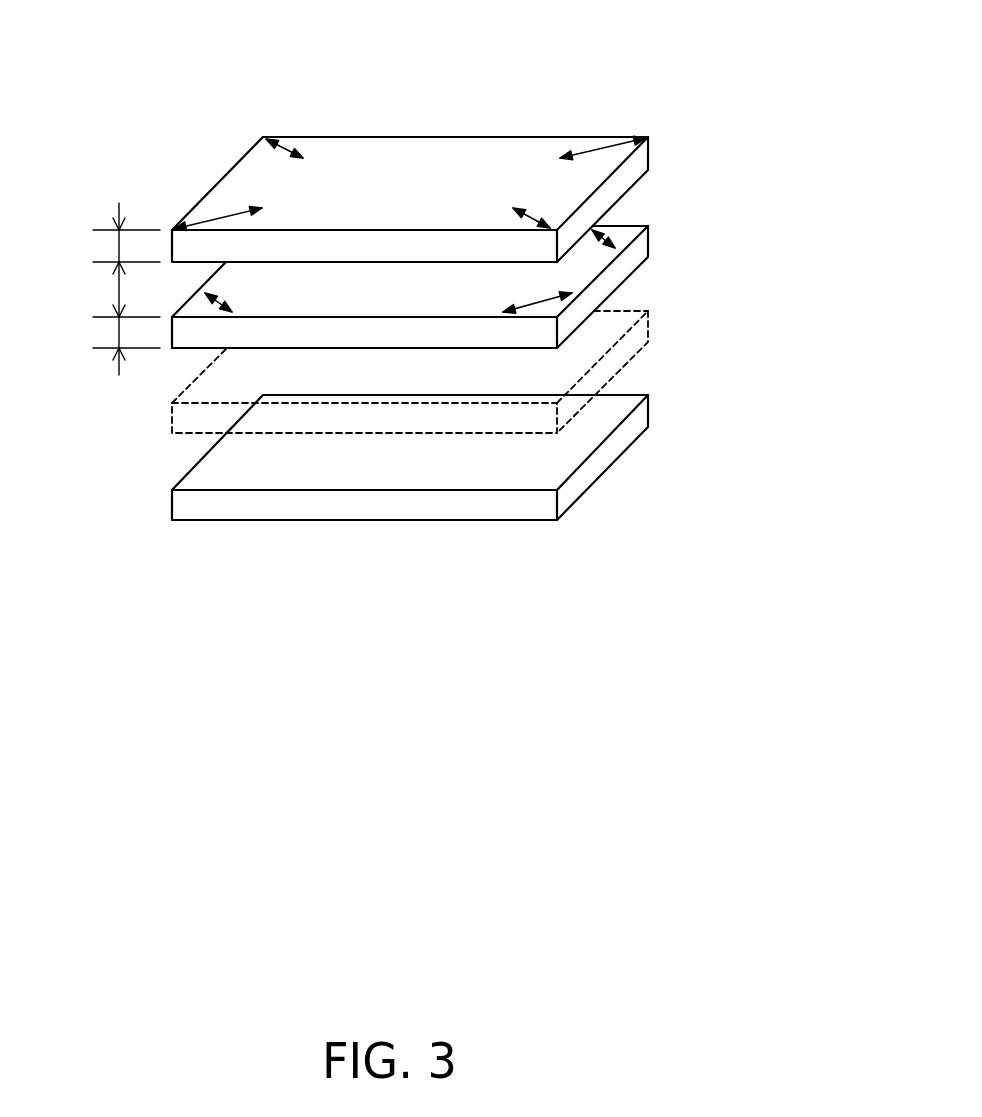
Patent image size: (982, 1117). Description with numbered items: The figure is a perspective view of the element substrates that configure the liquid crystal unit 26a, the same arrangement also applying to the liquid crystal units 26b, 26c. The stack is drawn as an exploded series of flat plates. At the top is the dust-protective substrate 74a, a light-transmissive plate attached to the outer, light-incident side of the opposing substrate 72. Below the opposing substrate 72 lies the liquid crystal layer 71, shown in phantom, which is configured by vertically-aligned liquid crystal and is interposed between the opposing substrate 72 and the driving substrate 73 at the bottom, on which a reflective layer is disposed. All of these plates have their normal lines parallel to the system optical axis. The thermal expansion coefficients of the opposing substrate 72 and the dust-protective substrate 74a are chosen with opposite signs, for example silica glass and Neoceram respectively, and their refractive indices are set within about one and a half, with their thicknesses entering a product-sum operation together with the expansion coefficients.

The liquid crystal unit 26a is at (780, 37).
The liquid crystal unit 26b is at (820, 75).
The liquid crystal unit 26c is at (820, 75).
The dust-protective substrate 74a is at (650, 157).
The opposing substrate 72 is at (650, 243).
The liquid crystal layer 71 is at (652, 327).
The driving substrate 73 is at (652, 413).